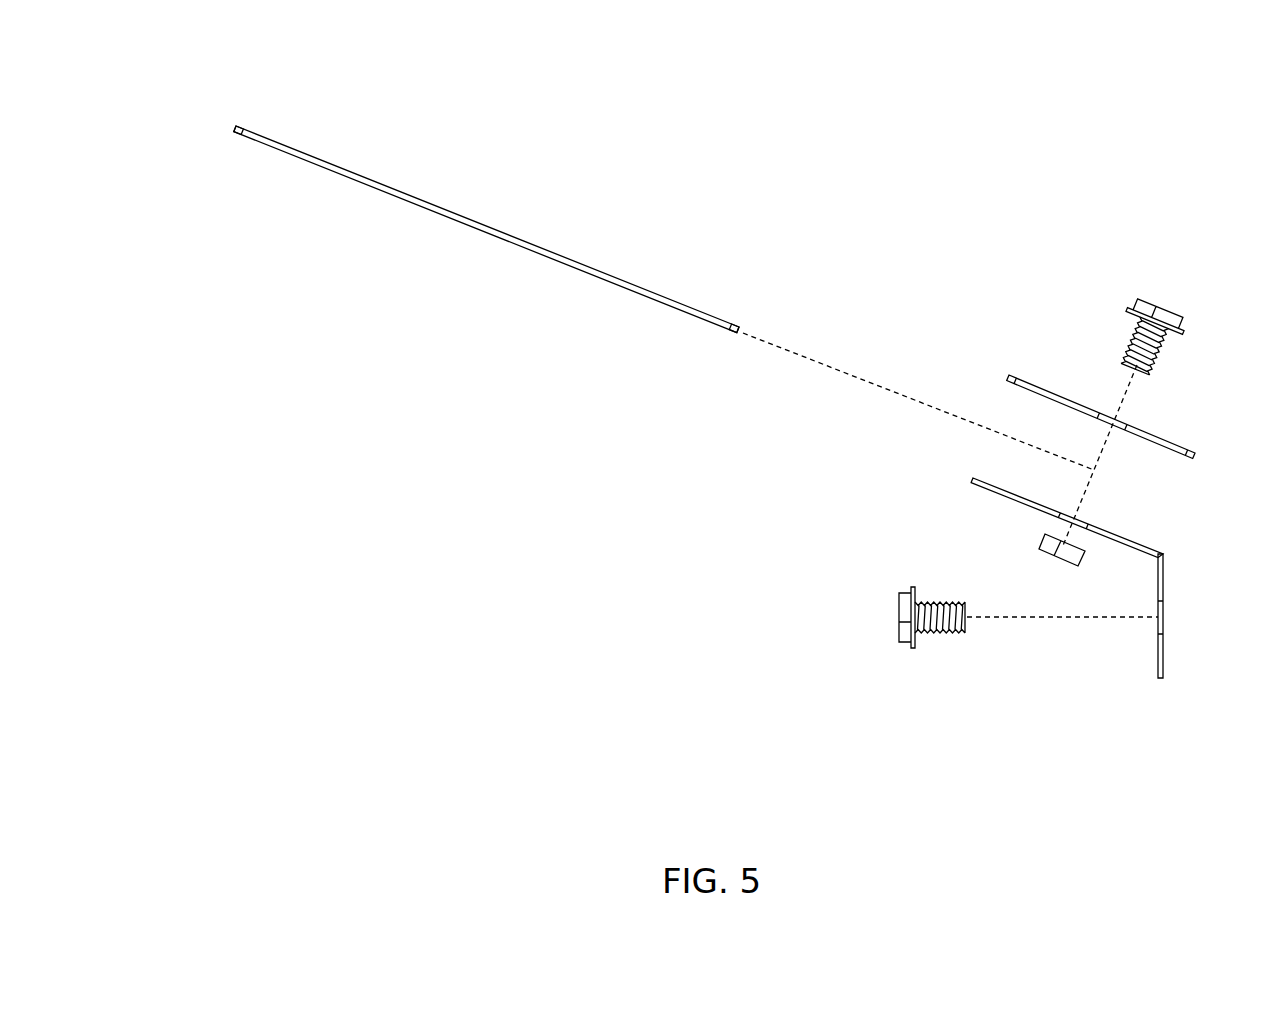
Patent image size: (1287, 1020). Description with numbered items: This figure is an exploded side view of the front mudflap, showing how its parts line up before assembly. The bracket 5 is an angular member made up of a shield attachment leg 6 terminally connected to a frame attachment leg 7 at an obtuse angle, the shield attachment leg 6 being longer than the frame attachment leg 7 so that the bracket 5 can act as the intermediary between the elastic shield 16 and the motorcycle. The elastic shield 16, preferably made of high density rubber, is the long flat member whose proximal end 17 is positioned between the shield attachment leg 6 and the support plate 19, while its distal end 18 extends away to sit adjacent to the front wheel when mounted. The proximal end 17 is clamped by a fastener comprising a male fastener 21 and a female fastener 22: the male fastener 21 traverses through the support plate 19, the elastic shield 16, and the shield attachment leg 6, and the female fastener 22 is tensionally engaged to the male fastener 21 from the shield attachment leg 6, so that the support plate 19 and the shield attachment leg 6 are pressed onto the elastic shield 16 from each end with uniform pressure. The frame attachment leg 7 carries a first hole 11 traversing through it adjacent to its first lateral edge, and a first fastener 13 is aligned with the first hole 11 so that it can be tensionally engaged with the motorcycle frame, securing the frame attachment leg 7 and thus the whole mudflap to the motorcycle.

The bracket 5 is at (1098, 611).
The shield attachment leg 6 is at (983, 485).
The frame attachment leg 7 is at (1163, 662).
The first hole 11 is at (1161, 613).
The first fastener 13 is at (903, 613).
The elastic shield 16 is at (477, 193).
The proximal end 17 is at (707, 310).
The distal end 18 is at (254, 128).
The support plate 19 is at (1190, 445).
The male fastener 21 is at (1145, 312).
The female fastener 22 is at (1044, 576).